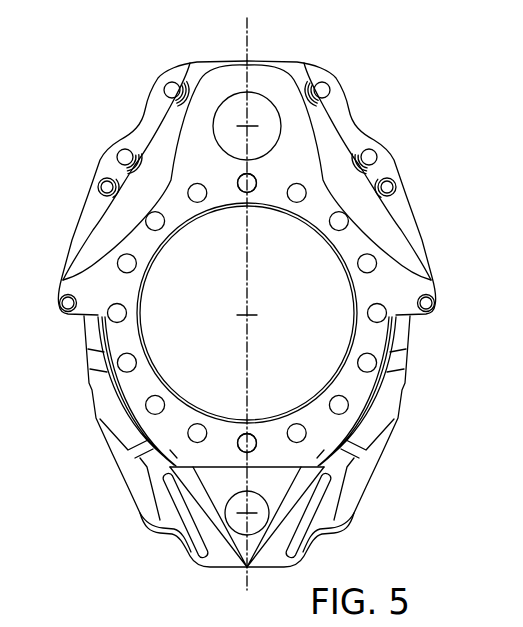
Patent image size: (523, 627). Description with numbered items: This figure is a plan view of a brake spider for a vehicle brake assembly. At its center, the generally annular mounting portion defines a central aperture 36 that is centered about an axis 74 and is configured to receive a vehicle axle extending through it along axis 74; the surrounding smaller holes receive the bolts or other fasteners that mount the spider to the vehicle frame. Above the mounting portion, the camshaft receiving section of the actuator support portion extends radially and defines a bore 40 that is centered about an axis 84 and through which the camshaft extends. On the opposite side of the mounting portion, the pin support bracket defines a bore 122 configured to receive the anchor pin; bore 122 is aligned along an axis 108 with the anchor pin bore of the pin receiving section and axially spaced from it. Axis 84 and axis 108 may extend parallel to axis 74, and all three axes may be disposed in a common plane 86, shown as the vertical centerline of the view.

The central aperture 36 is at (192, 375).
The bore 40 is at (227, 115).
The axis 74 is at (247, 313).
The axis 84 is at (268, 107).
The common plane 86 is at (248, 23).
The axis 108 is at (270, 528).
The bore 122 is at (258, 529).